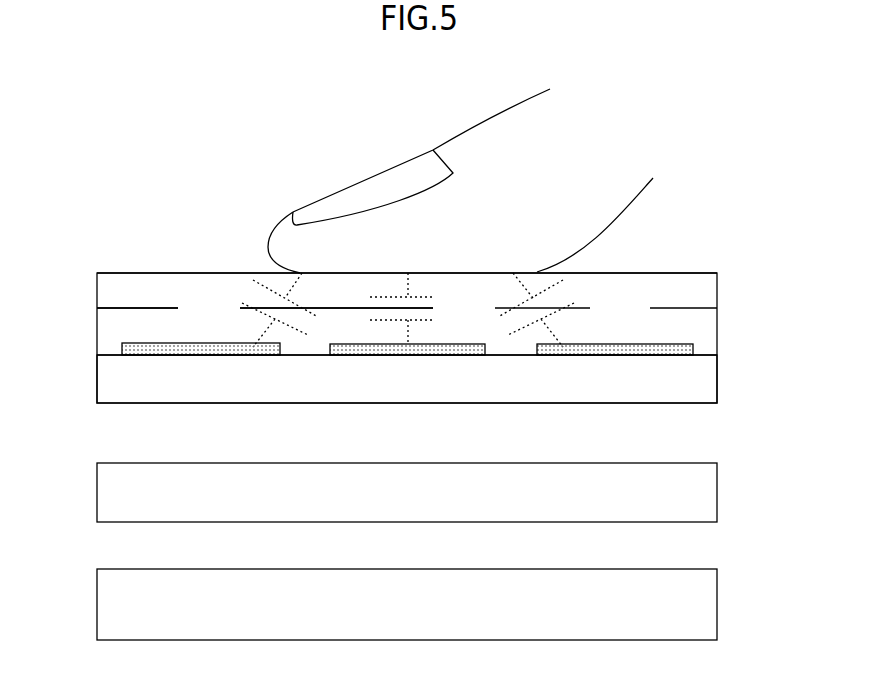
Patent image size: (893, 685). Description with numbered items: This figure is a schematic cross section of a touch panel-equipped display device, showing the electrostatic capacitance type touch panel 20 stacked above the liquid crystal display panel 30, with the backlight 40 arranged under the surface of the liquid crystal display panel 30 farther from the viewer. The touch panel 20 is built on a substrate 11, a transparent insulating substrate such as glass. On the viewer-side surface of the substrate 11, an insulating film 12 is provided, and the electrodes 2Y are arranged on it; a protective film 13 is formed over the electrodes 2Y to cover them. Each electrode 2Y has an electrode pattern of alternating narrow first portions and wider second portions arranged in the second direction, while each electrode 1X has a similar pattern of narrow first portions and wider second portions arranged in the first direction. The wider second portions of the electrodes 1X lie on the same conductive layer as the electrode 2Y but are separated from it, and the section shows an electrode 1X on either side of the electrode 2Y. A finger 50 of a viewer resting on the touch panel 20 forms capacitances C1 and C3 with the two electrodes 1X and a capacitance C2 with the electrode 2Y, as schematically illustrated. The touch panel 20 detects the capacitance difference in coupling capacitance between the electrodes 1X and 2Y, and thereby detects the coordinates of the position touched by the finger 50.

The touch panel 20 is at (730, 273).
The protective film 13 is at (110, 297).
The insulating film 12 is at (110, 330).
The substrate 11 is at (110, 378).
The electrode 1X is at (200, 355).
The electrode 2Y is at (445, 355).
The capacitance C1 is at (257, 310).
The capacitance C2 is at (424, 308).
The capacitance C3 is at (565, 310).
The finger 50 is at (318, 215).
The liquid crystal display panel 30 is at (705, 499).
The backlight 40 is at (705, 606).